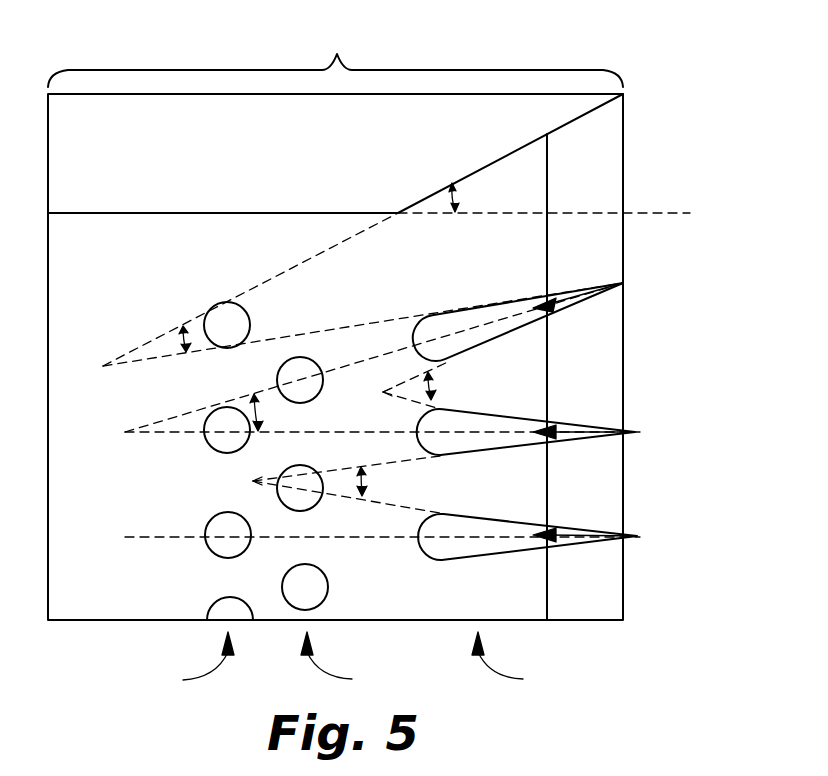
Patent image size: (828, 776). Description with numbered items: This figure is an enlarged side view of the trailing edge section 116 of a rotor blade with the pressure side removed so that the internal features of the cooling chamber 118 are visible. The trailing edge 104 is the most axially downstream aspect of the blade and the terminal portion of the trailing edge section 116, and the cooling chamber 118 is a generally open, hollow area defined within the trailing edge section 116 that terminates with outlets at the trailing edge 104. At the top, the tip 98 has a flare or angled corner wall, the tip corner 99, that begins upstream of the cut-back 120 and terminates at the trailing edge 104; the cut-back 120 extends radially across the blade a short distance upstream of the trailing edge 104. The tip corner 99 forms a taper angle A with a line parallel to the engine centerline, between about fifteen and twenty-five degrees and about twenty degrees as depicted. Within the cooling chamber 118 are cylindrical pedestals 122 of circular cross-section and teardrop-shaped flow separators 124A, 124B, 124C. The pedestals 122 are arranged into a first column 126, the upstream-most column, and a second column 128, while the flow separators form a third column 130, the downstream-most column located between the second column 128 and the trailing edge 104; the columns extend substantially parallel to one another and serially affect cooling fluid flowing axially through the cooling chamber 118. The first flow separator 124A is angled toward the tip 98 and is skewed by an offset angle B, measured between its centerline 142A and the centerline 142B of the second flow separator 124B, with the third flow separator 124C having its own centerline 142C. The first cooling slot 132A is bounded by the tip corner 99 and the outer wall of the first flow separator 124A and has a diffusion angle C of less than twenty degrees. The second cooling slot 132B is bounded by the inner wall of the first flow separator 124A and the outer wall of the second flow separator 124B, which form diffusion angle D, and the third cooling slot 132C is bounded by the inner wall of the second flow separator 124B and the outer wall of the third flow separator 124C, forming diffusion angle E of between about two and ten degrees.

The trailing edge 104 is at (623, 620).
The trailing edge section 116 is at (335, 58).
The tip 98 is at (223, 182).
The tip corner 99 is at (472, 170).
The cooling chamber 118 is at (384, 237).
The cut-back 120 is at (548, 598).
The pedestals 122 is at (206, 524).
The first flow separator 124A is at (418, 318).
The second flow separator 124B is at (418, 421).
The third flow separator 124C is at (418, 527).
The first column 126 is at (187, 663).
The second column 128 is at (347, 663).
The third column 130 is at (517, 663).
The first cooling slot 132A is at (363, 289).
The second cooling slot 132B is at (382, 357).
The third cooling slot 132C is at (382, 502).
The centerline of first flow separator 142A is at (623, 284).
The centerline of second flow separator 142B is at (560, 432).
The centerline of third flow separator 142C is at (560, 534).
The taper angle A is at (463, 198).
The offset angle B is at (256, 398).
The diffusion angle of first cooling slot C is at (186, 330).
The diffusion angle of second cooling slot D is at (437, 389).
The diffusion angle of third cooling slot E is at (368, 481).